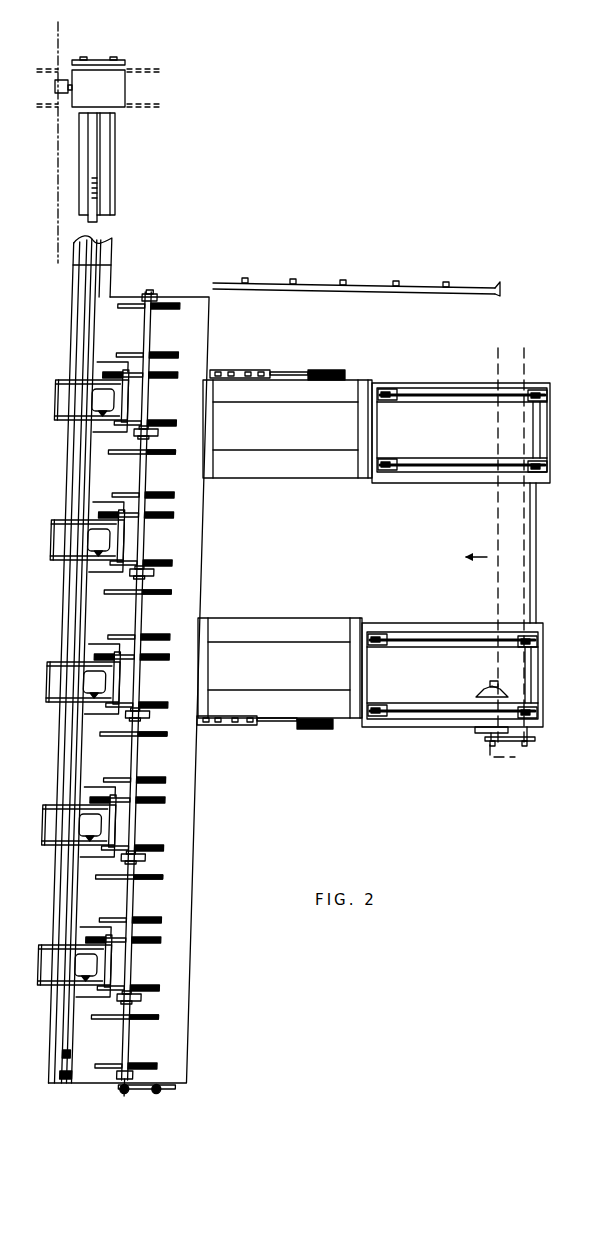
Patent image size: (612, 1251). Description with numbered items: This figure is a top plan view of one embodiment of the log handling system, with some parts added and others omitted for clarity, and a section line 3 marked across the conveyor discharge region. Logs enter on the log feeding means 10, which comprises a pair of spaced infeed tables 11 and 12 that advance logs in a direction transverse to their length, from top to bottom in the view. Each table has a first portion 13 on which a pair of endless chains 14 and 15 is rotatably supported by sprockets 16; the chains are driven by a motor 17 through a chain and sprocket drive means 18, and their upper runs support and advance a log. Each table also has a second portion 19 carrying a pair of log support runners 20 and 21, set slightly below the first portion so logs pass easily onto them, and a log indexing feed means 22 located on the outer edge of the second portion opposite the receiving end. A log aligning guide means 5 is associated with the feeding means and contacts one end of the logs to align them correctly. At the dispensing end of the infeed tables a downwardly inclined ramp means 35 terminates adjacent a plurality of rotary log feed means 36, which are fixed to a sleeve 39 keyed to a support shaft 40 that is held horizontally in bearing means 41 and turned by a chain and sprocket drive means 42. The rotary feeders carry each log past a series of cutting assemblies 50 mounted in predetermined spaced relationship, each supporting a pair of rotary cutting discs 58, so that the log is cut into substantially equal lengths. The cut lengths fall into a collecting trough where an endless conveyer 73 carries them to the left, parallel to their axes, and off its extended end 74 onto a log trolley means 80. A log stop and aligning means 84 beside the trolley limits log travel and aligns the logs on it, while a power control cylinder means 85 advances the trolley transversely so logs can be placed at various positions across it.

The section line 3- 3 is at (58, 22).
The log aligning guide means 5 is at (378, 283).
The log feeding means 10 is at (395, 383).
The infeed table 11 is at (551, 430).
The infeed table 12 is at (544, 662).
The first portion 13 is at (477, 483).
The endless chain 14 is at (467, 399).
The endless chain 15 is at (440, 471).
The sprockets 16 is at (383, 400).
The motor 17 is at (477, 734).
The chain and sprocket drive means 18 is at (537, 743).
The second portion 19 is at (343, 480).
The log support runner 20 is at (318, 403).
The log support runner 21 is at (280, 478).
The log indexing feed means 22 is at (252, 368).
The downwardly inclined ramp means 35 is at (192, 772).
The rotary log feed means 36 is at (158, 452).
The sleeve 39 is at (151, 333).
The support shaft 40 is at (146, 585).
The bearing means 41 is at (157, 297).
The chain and sprocket drive means 42 is at (130, 1093).
The cutting assembly 50 is at (53, 406).
The rotary cutting discs 58 is at (103, 362).
The endless conveyer 73 is at (66, 1081).
The extended end 74 is at (119, 177).
The log trolley means 80 is at (130, 98).
The log stop and aligning means 84 is at (118, 60).
The power control cylinder means 85 is at (55, 87).